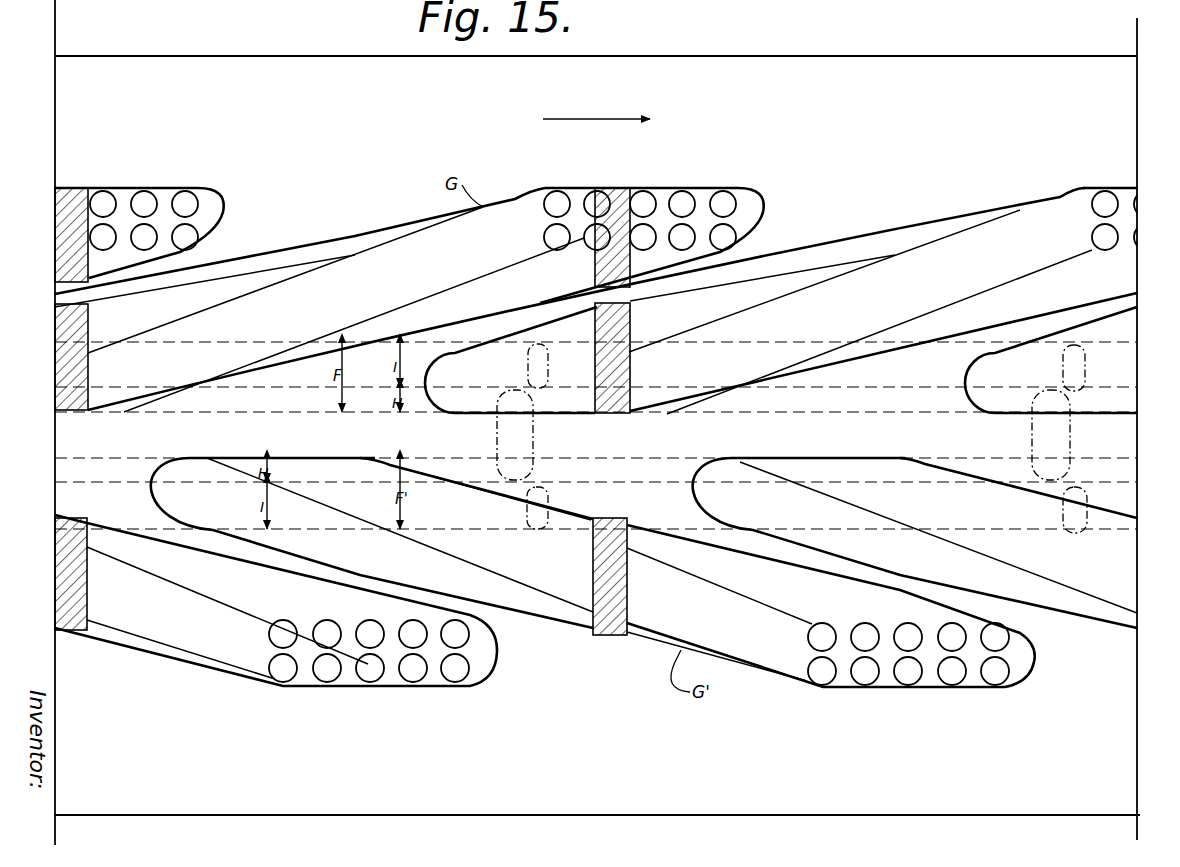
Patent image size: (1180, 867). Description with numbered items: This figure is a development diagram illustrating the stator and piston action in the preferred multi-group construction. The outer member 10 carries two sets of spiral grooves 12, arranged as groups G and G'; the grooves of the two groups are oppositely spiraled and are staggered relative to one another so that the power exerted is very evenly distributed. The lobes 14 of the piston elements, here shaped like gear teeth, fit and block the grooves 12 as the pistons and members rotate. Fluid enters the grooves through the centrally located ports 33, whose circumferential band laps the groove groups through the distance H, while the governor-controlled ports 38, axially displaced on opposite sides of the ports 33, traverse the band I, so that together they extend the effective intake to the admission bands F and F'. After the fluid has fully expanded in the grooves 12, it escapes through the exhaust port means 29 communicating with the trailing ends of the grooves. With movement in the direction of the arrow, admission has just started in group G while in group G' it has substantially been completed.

The outer member 10 is at (278, 57).
The spiral grooves 12 is at (170, 165).
The lobes 14 is at (88, 263).
The exhaust port means 29 is at (185, 204).
The ports 33 is at (533, 445).
The ports 38 is at (540, 350).